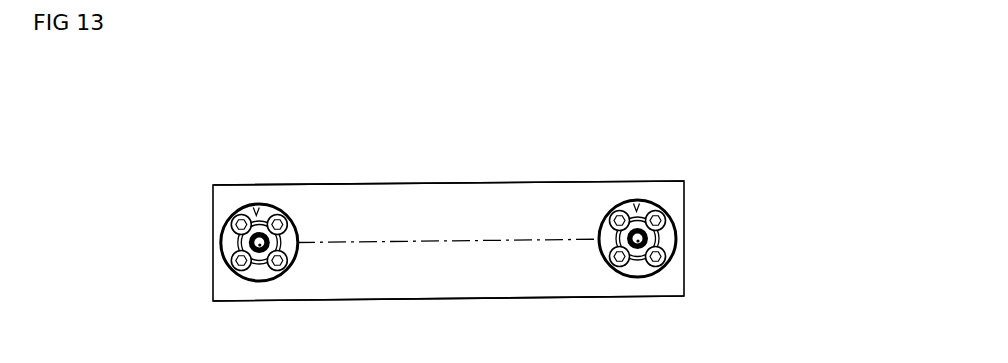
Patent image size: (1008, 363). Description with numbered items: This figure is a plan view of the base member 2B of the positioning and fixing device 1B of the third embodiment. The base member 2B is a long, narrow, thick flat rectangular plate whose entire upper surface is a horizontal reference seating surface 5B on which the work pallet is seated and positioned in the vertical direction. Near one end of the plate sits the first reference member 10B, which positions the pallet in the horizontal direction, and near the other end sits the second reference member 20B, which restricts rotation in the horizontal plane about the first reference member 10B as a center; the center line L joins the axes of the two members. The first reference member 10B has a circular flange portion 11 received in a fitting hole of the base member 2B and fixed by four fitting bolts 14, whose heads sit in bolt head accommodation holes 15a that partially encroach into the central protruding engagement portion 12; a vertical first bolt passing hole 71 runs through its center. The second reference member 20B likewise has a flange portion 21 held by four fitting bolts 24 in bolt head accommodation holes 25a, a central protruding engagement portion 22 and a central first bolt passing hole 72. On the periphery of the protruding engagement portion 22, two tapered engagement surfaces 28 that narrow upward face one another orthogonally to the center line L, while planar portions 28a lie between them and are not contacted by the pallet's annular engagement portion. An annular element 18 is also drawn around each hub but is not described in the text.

The positioning and fixing device 1B is at (451, 111).
The base member 2B is at (483, 179).
The reference seating surface 5B is at (514, 298).
The center line L is at (403, 243).
The first reference member 10B is at (270, 244).
The flange portion 11 is at (229, 245).
The protruding engagement portion 12 is at (254, 211).
The fitting bolts 14 is at (233, 217).
The bolt head accommodation hole 15a is at (243, 266).
The annular flange 18 is at (262, 211).
The first bolt passing hole 71 is at (262, 253).
The second reference member 20B is at (652, 237).
The flange portion 21 is at (668, 239).
The protruding engagement portion 22 is at (638, 207).
The fitting bolts 24 is at (667, 259).
The bolt head accommodation holes 25a is at (615, 222).
The tapered engagement surfaces 28 is at (637, 258).
The planar portions 28a is at (664, 232).
The first bolt passing hole 72 is at (637, 249).